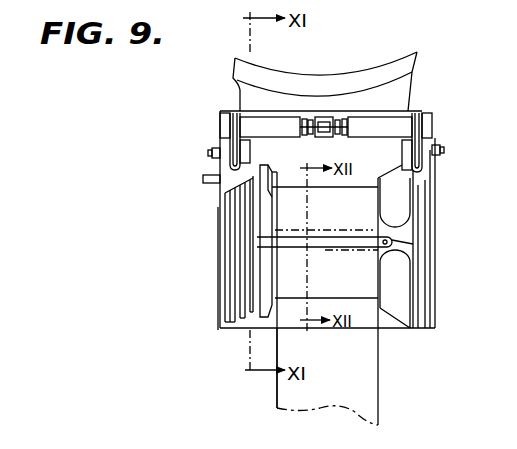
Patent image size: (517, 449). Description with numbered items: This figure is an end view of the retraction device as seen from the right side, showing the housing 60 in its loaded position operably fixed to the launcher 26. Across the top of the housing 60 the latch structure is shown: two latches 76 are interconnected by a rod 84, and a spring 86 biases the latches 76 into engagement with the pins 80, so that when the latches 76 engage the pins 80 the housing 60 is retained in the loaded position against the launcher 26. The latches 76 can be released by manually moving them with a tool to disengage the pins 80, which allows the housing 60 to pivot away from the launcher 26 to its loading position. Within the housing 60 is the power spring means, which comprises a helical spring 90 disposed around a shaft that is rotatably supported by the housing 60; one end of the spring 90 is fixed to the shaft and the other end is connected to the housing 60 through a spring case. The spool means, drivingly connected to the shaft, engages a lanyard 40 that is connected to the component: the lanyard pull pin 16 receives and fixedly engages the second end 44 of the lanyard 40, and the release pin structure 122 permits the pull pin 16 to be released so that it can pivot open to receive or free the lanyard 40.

The launcher 26 is at (233, 67).
The rod 84 is at (373, 118).
The spring 86 is at (342, 115).
The latch 76 is at (233, 147).
The pin 80 is at (210, 153).
The housing 60 is at (427, 180).
The helical spring 90 is at (344, 214).
The lanyard pull pin 16 is at (278, 252).
The second end of lanyard 44 is at (325, 252).
The release pin structure 122 is at (392, 243).
The lanyard 40 is at (276, 385).